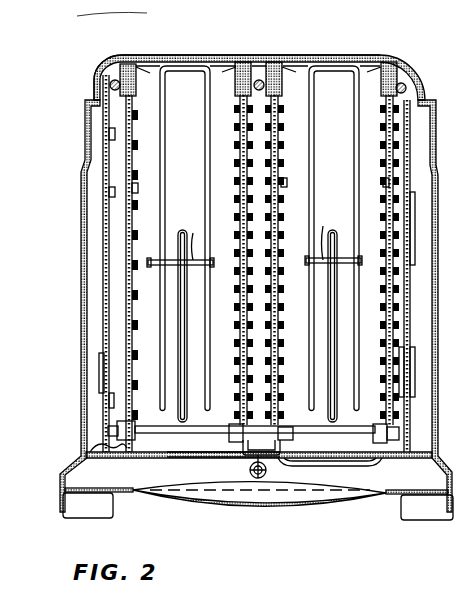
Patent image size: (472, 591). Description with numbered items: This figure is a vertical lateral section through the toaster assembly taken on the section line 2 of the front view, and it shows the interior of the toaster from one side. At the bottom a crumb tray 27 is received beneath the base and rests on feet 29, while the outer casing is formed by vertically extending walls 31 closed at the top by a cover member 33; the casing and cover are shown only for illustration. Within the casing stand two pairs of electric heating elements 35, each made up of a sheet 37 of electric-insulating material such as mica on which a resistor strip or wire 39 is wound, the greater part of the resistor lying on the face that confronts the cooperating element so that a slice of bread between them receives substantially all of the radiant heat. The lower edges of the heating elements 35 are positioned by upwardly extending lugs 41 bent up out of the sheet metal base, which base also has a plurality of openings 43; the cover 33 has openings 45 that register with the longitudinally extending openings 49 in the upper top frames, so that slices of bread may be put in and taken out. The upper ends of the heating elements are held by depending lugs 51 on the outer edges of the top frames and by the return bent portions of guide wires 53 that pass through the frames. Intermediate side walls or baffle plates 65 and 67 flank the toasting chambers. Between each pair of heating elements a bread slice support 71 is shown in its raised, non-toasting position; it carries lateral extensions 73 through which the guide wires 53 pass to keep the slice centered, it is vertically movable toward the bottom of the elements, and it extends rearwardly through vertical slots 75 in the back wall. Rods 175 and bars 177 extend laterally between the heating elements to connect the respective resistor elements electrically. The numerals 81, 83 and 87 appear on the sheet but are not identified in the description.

The section line 2 is at (271, 5).
The crumb tray 27 is at (383, 497).
The feet 29 is at (115, 512).
The vertically extending walls 31 is at (438, 318).
The cover member 33 is at (133, 57).
The electric heating elements 35 is at (386, 185).
The sheets of electric-insulating material 37 is at (240, 148).
The resistor strip or wire 39 is at (278, 225).
The upwardly extending lugs 41 is at (123, 448).
The openings 43 is at (176, 452).
The openings 45 is at (338, 56).
The longitudinally extending openings 49 is at (198, 64).
The depending lugs 51 is at (106, 70).
The guide wires 53 is at (356, 112).
The intermediate side wall or baffle plate 65 is at (103, 185).
The intermediate side wall or baffle plate 67 is at (411, 170).
The bread slice supports 71 is at (261, 313).
The lateral extensions 73 is at (306, 264).
The vertical slots 75 is at (185, 318).
The casing interior chamber 81 is at (56, 283).
The header element 83 is at (335, 5).
The header element 87 is at (295, 5).
The rods 175 is at (202, 436).
The bars 177 is at (344, 457).